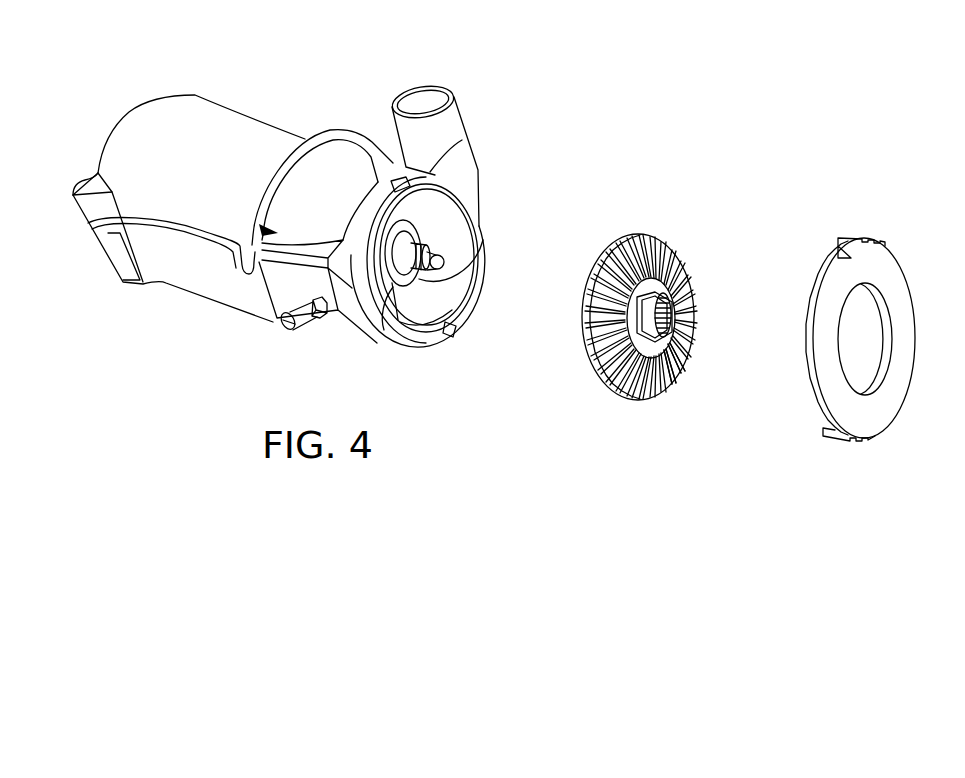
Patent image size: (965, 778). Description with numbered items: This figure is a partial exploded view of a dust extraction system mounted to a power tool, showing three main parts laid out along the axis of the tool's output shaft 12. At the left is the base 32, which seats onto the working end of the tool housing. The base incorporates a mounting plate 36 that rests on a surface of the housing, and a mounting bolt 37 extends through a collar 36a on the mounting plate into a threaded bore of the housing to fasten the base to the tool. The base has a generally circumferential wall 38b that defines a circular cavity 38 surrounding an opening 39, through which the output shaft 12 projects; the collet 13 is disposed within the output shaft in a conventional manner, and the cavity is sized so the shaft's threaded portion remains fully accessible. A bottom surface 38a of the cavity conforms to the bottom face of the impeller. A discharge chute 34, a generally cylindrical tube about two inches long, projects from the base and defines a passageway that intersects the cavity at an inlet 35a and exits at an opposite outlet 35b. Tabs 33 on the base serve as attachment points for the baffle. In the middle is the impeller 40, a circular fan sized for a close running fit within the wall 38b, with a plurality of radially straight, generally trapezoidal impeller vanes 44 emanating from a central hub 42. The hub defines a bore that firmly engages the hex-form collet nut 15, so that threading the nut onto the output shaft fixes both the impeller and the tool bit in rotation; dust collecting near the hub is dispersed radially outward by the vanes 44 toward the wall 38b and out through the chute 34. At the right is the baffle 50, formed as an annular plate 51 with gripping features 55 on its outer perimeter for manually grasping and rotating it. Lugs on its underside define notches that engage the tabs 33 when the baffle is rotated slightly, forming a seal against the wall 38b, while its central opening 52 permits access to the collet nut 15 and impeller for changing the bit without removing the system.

The output shaft 12 is at (427, 317).
The collet 13 is at (462, 237).
The collet nut 15 is at (680, 343).
The base 32 is at (480, 225).
The tabs 33 is at (392, 179).
The discharge chute 34 is at (445, 135).
The inlet 35a is at (442, 203).
The outlet 35b is at (427, 95).
The mounting plate 36 is at (340, 318).
The collar 36a is at (325, 318).
The mounting bolt 37 is at (290, 332).
The cavity 38 is at (430, 267).
The bottom surface 38a is at (387, 295).
The circumferential wall 38b is at (427, 317).
The opening 39 is at (400, 285).
The impeller 40 is at (670, 300).
The central hub 42 is at (668, 377).
The impeller vanes 44 is at (673, 363).
The baffle 50 is at (897, 301).
The annular plate 51 is at (877, 403).
The opening 52 is at (890, 360).
The gripping features 55 is at (845, 238).